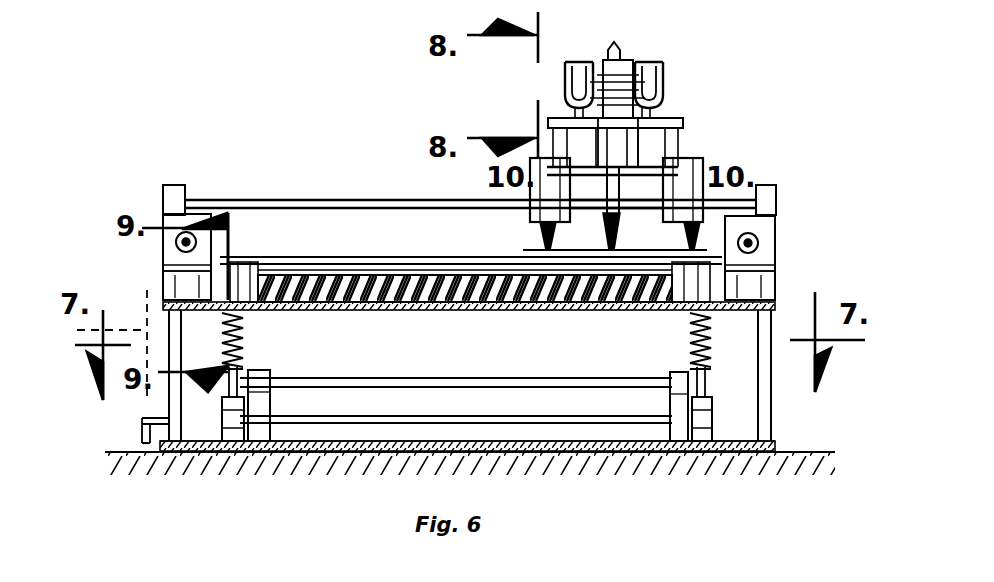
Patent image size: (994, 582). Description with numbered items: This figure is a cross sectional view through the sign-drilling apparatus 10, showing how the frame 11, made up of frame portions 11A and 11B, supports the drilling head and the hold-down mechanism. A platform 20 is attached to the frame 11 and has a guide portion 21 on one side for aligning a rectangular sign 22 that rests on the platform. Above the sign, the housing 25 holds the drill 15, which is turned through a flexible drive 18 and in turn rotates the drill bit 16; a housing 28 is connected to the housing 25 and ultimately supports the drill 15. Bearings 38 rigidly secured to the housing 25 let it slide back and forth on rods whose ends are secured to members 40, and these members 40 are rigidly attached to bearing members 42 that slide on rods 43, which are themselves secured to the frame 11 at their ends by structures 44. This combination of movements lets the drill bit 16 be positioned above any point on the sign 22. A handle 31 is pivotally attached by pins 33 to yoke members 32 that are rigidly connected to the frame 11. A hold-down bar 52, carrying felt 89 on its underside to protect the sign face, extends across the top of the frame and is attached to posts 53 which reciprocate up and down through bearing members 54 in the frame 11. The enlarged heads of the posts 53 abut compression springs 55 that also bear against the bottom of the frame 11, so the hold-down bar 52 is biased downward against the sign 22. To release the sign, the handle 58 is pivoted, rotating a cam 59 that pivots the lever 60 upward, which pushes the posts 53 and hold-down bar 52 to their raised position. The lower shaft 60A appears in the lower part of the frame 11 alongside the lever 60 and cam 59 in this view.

The apparatus 10 is at (733, 100).
The frame 11 is at (498, 310).
The frame portion 11A is at (578, 441).
The frame portion 11B is at (175, 403).
The drill 15 is at (624, 75).
The drill bit 16 is at (618, 248).
The flexible drive 18 is at (604, 56).
The platform 20 is at (378, 275).
The guide portion 21 is at (642, 308).
The sign 22 is at (442, 275).
The housing 25 is at (530, 166).
The housing 28 is at (548, 121).
The handle 31 is at (648, 68).
The yoke members 32 is at (566, 96).
The pins 33 is at (566, 72).
The bearings 38 is at (530, 210).
The members 40 is at (174, 185).
The bearing members 42 is at (172, 258).
The rods 43 is at (177, 242).
The structures 44 is at (165, 287).
The hold-down bar 52 is at (285, 255).
The posts 53 is at (244, 336).
The bearing members 54 is at (252, 304).
The compression springs 55 is at (244, 355).
The handle 58 is at (77, 330).
The cam 59 is at (238, 443).
The lever 60 is at (222, 398).
The lower shaft 60A is at (404, 380).
The felt 89 is at (318, 262).